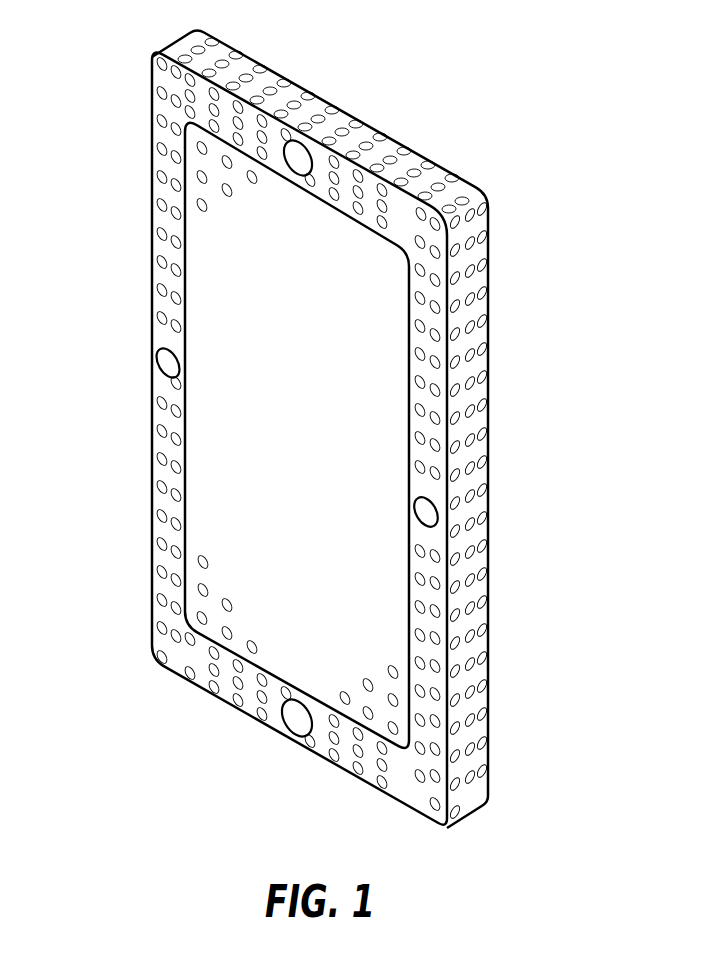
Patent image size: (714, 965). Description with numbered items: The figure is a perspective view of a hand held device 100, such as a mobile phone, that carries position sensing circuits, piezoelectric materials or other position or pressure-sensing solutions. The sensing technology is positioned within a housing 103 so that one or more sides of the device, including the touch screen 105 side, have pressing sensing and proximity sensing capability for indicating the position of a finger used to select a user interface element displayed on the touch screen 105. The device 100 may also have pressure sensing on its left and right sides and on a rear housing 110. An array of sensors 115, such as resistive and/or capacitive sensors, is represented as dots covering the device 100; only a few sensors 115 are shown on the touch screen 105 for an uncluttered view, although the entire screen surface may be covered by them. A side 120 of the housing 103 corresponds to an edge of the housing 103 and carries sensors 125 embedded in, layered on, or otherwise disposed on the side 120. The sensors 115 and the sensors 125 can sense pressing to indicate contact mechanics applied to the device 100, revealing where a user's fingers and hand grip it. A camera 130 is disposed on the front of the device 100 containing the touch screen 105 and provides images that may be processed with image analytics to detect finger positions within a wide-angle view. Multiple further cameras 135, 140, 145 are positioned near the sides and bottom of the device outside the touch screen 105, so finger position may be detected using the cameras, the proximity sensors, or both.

The hand held device 100 is at (438, 64).
The housing 103 is at (413, 153).
The touch screen 105 is at (215, 442).
The rear housing 110 is at (491, 248).
The sensors 115 is at (162, 203).
The side 120 is at (473, 452).
The sensors 125 is at (470, 302).
The camera 130 is at (298, 161).
The camera 135 is at (425, 513).
The camera 140 is at (297, 718).
The camera 145 is at (170, 364).